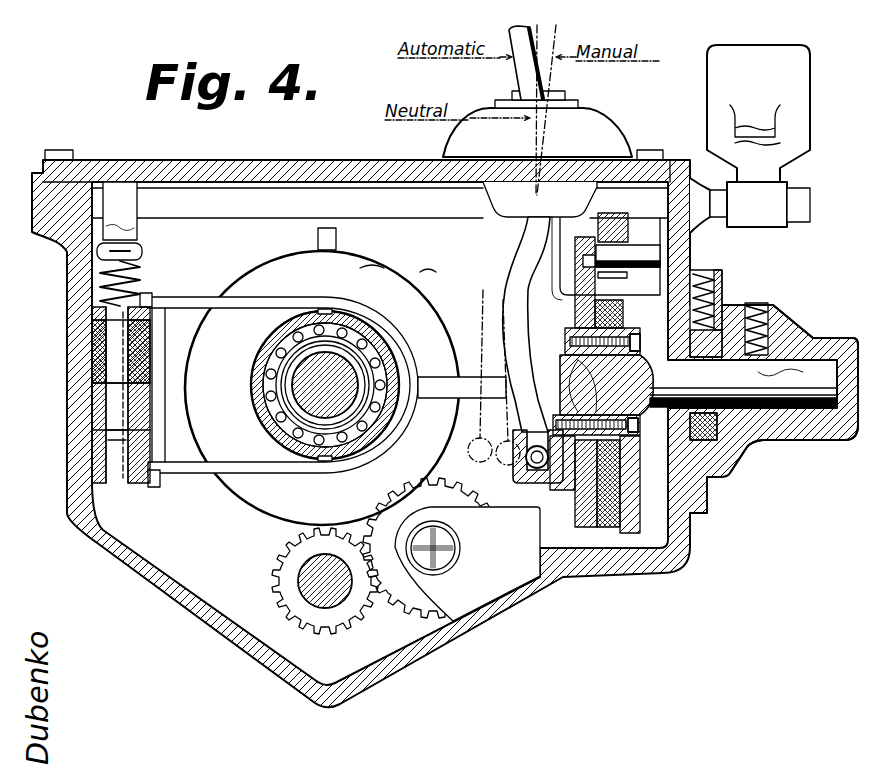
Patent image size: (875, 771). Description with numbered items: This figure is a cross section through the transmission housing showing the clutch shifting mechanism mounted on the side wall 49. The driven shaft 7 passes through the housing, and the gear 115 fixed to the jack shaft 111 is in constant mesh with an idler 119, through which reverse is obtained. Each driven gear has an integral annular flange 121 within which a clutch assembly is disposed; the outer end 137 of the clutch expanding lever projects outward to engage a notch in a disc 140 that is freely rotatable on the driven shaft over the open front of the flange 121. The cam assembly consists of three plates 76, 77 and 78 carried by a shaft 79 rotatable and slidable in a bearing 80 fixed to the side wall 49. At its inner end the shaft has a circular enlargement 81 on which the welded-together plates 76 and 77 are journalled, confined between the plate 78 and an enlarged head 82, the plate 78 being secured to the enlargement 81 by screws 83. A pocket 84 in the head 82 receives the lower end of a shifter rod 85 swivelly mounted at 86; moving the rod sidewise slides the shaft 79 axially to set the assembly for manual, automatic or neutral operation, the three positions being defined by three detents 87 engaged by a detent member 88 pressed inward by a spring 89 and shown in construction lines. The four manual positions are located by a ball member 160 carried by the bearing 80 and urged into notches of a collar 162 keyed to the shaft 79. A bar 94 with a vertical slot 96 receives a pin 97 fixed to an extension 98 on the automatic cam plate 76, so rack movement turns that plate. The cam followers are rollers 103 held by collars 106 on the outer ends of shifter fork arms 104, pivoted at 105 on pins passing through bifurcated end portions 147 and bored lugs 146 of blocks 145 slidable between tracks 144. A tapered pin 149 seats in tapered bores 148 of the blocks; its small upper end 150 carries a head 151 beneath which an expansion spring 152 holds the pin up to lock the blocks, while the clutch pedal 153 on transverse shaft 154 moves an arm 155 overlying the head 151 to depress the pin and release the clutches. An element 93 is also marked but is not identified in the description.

The side wall 49 is at (688, 490).
The idler 119 is at (410, 618).
The annular flange 121 is at (296, 254).
The outer end of expanding lever 137 is at (337, 238).
The disc 140 is at (372, 268).
The drum 93 is at (431, 266).
The driven shaft 7 is at (340, 362).
The pivot pins 105 is at (158, 486).
The shifter fork arms 104 is at (466, 388).
The bifurcated end portions 147 is at (146, 300).
The bored lugs 146 is at (168, 331).
The tracks 144 is at (95, 313).
The blocks 145 is at (95, 360).
The upper small diameter end 150 is at (118, 334).
The tapered bores 148 is at (140, 372).
The tapered pin 149 is at (140, 422).
The head 151 is at (105, 253).
The expansion spring 152 is at (100, 286).
The arm 155 is at (137, 210).
The gear 115 is at (275, 572).
The jack shaft 111 is at (316, 600).
The swivel mounting 86 is at (606, 128).
The shifter rod 85 is at (505, 284).
The pocket 84 is at (513, 420).
The circular enlargement 81 is at (577, 482).
The bar 94 is at (622, 205).
The pin 97 is at (658, 241).
The vertical slot 96 is at (622, 283).
The extension 98 is at (577, 284).
The enlarged head 82 is at (594, 312).
The screws 83 is at (656, 323).
The rollers 103 is at (570, 362).
The collars 106 is at (572, 392).
The manual cam plate 78 is at (641, 500).
The automatic cam plate 76 is at (582, 516).
The cam plate 77 is at (612, 522).
The shaft 79 is at (743, 388).
The detents 87 is at (803, 372).
The bearing 80 is at (810, 445).
The collar 162 is at (722, 463).
The ball member 160 is at (740, 300).
The spring 89 is at (765, 310).
The detent member 88 is at (790, 331).
The clutch pedal 153 is at (772, 92).
The transverse shaft 154 is at (803, 190).